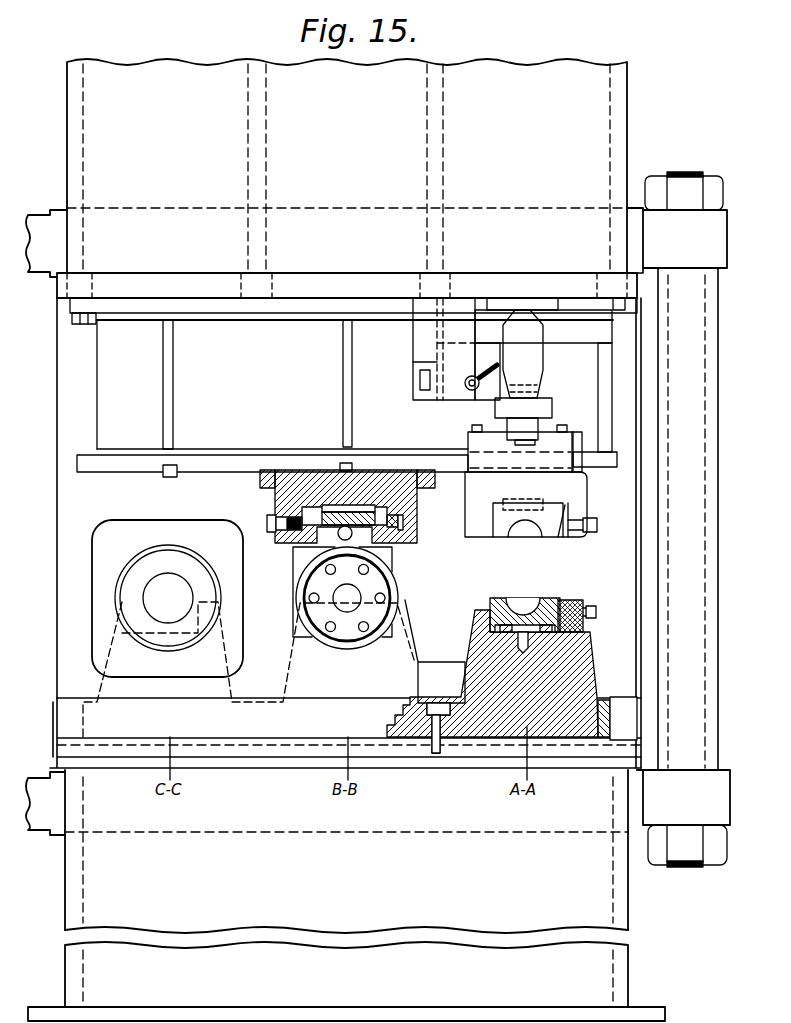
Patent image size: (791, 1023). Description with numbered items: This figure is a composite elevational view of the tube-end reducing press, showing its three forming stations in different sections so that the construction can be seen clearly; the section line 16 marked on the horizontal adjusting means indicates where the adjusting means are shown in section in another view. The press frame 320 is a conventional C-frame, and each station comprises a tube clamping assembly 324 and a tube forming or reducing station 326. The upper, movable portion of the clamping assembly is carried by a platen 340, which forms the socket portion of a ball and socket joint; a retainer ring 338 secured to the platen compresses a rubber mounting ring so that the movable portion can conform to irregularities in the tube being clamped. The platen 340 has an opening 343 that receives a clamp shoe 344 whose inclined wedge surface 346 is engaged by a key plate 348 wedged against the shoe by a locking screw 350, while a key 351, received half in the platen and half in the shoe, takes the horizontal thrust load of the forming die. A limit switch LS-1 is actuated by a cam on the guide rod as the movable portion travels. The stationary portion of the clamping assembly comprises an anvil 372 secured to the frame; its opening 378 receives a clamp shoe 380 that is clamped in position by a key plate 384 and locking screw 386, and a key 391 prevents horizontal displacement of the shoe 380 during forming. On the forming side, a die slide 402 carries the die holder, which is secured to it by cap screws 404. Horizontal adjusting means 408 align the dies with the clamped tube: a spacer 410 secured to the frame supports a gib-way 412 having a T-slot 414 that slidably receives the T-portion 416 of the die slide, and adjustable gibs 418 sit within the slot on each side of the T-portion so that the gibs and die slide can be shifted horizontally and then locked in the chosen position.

The press frame 320 is at (618, 92).
The spacer 410 is at (343, 355).
The gib-way 412 is at (290, 482).
The T-slot 414 is at (408, 478).
The T-portion 416 is at (358, 505).
The adjustable gib 418 is at (310, 500).
The horizontal adjusting means 408 is at (275, 544).
The section line 16 is at (253, 533).
The limit switch LS-1 is at (497, 360).
The retainer ring 338 is at (580, 445).
The platen 340 is at (583, 480).
The key 351 is at (520, 499).
The opening 343 is at (565, 508).
The clamp shoe 344 is at (503, 538).
The inclined wedge surface 346 is at (558, 538).
The key plate 348 is at (570, 537).
The locking screw 350 is at (597, 526).
The die slide 402 is at (300, 605).
The cap screws 404 is at (365, 632).
The tube forming or reducing station 326 is at (400, 598).
The anvil 372 is at (480, 650).
The opening 378 is at (497, 600).
The clamp shoe 380 is at (515, 600).
The tube clamping assembly 324 is at (588, 603).
The locking screw 386 is at (597, 610).
The key plate 384 is at (580, 625).
The key 391 is at (537, 638).